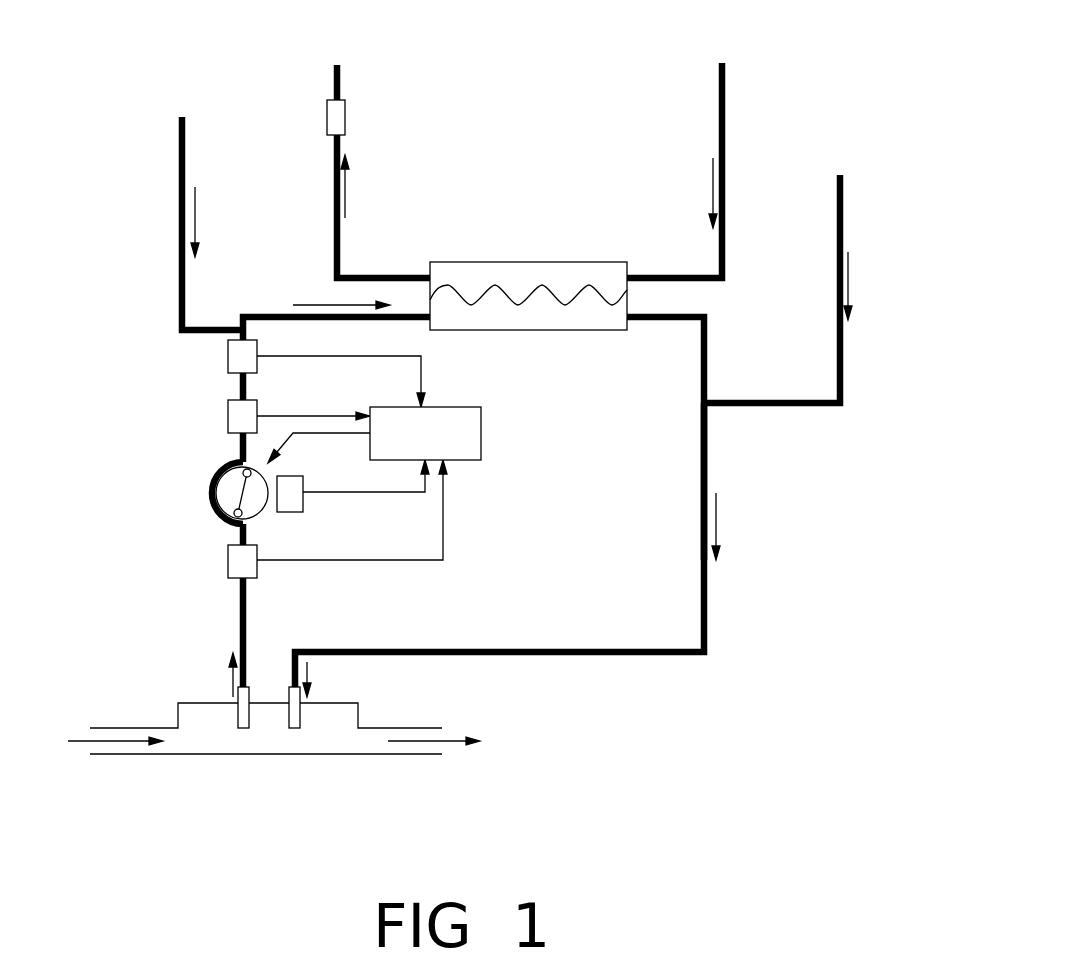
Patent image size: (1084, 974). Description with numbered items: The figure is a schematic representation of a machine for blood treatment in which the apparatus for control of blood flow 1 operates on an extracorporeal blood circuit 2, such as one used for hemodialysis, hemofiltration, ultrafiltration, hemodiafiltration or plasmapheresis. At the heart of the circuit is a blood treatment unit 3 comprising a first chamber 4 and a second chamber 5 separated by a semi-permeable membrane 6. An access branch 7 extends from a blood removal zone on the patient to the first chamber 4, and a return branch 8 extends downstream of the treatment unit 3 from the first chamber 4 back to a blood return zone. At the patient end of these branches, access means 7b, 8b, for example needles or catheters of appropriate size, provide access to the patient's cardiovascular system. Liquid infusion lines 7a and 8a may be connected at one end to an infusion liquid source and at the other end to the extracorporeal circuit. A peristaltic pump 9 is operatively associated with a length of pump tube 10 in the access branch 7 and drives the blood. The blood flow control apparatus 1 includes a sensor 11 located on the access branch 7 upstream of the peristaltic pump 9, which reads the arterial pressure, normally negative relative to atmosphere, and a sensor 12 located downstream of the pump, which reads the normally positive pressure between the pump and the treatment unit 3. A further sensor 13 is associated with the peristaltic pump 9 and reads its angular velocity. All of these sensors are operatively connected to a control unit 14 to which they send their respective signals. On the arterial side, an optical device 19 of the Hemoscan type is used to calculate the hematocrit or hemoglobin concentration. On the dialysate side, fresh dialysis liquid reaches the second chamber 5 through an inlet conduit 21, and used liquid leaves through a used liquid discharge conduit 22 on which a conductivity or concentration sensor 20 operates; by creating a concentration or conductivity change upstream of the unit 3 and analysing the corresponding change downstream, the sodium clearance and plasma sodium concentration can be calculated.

The apparatus for control of blood flow 1 is at (540, 522).
The extracorporeal blood circuit 2 is at (718, 612).
The blood treatment unit 3 is at (523, 262).
The first chamber 4 is at (555, 318).
The second chamber 5 is at (572, 275).
The semi-permeable membrane 6 is at (455, 287).
The access branch 7 is at (243, 615).
The infusion line 7a is at (182, 143).
The access means 7b is at (243, 730).
The return branch 8 is at (707, 452).
The infusion line 8a is at (840, 212).
The access means 8b is at (296, 730).
The peristaltic pump 9 is at (230, 493).
The pump tube 10 is at (212, 478).
The sensor 11 is at (228, 562).
The sensor 12 is at (228, 415).
The sensor 13 is at (303, 507).
The control unit 14 is at (481, 432).
The optical device 19 is at (228, 355).
The conductivity or concentration sensor 20 is at (345, 117).
The inlet conduit 21 is at (725, 120).
The used liquid discharge conduit 22 is at (337, 218).